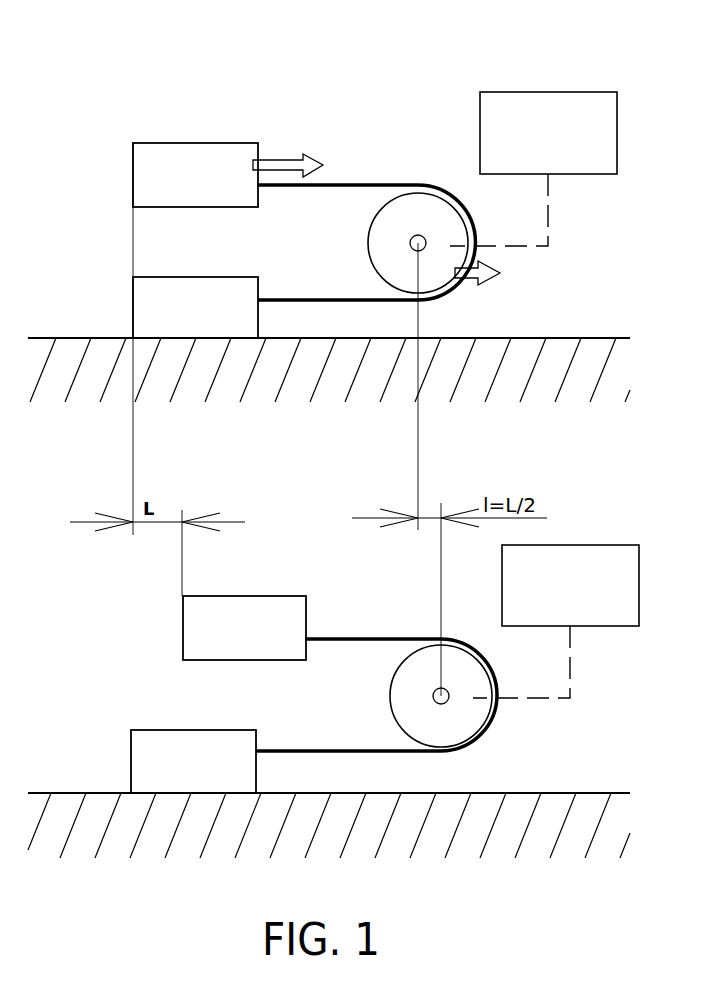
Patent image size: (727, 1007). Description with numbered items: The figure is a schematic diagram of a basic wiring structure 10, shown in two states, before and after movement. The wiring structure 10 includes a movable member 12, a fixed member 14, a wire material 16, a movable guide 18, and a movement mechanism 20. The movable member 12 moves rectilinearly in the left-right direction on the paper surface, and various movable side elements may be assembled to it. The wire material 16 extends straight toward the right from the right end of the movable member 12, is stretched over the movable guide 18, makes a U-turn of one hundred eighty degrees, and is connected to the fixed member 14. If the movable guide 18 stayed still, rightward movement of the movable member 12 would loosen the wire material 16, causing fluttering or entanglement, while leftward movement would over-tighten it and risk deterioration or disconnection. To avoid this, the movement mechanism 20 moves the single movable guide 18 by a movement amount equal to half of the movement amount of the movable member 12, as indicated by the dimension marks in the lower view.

The wiring structure 10 is at (151, 116).
The movable member 12 is at (237, 158).
The fixed member 14 is at (158, 288).
The wire material 16 is at (340, 183).
The movable guide 18 is at (378, 245).
The movement mechanism 20 is at (585, 92).